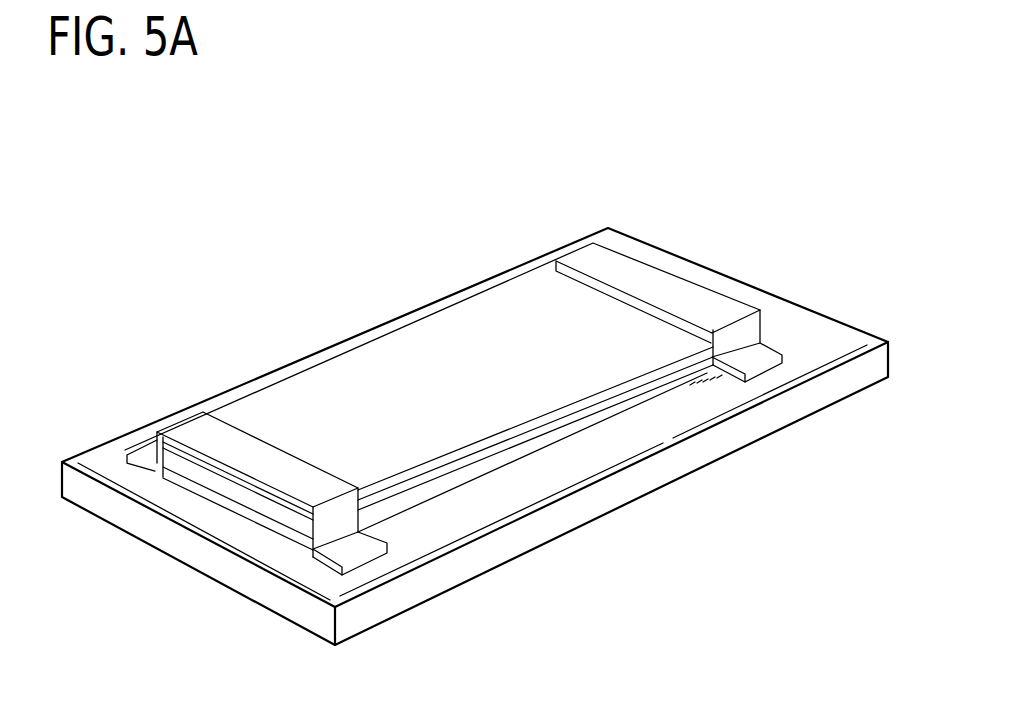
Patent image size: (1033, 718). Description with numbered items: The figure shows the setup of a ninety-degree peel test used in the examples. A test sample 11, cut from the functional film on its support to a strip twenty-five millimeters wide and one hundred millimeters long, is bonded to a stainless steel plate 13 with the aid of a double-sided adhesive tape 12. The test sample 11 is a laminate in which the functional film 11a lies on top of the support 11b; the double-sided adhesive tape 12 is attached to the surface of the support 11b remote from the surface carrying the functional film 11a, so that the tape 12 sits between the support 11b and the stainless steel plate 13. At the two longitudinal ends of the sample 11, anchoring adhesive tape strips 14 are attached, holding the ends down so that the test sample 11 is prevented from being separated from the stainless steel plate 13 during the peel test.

The test sample 11 is at (442, 275).
The functional film 11a is at (530, 308).
The support 11b is at (685, 357).
The double-sided adhesive tape 12 is at (663, 383).
The stainless steel plate 13 is at (602, 497).
The anchoring adhesive tape strips 14 is at (192, 432).